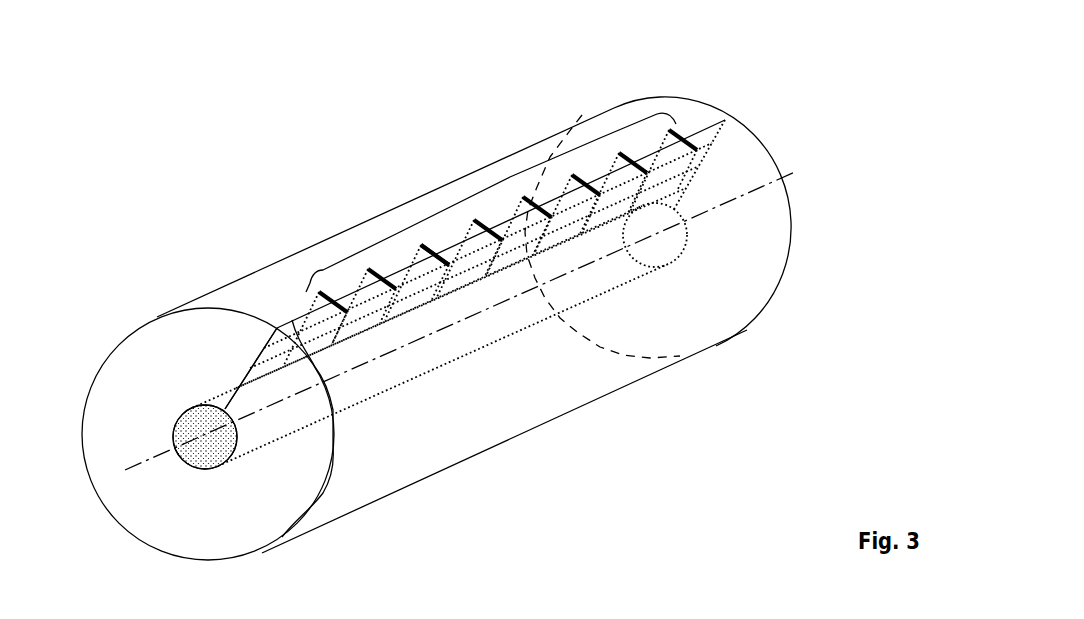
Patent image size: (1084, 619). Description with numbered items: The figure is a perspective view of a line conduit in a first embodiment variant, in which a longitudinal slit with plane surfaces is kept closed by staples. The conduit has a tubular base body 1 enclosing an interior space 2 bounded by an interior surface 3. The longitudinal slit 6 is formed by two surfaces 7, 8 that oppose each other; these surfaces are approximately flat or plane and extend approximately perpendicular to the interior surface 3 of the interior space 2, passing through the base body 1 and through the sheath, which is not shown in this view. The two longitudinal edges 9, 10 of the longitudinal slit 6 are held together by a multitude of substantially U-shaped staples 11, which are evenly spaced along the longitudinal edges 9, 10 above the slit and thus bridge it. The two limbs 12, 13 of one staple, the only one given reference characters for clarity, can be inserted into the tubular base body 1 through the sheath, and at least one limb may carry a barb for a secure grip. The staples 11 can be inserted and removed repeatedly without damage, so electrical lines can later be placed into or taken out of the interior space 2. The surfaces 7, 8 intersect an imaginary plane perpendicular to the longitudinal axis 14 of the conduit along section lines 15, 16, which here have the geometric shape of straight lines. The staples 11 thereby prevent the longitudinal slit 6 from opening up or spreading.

The tubular base body 1 is at (703, 327).
The interior space 2 is at (224, 459).
The interior surface 3 is at (192, 452).
The longitudinal slit 6 is at (704, 118).
The surface of the longitudinal slit 7 is at (248, 348).
The surface of the longitudinal slit 8 is at (270, 385).
The longitudinal edge 9 is at (292, 322).
The longitudinal edge 10 is at (330, 308).
The staple 11 is at (547, 158).
The limb of the staple 12 is at (423, 268).
The limb of the staple 13 is at (420, 248).
The longitudinal axis 14 is at (797, 172).
The section line 15 is at (160, 360).
The section line 16 is at (250, 382).